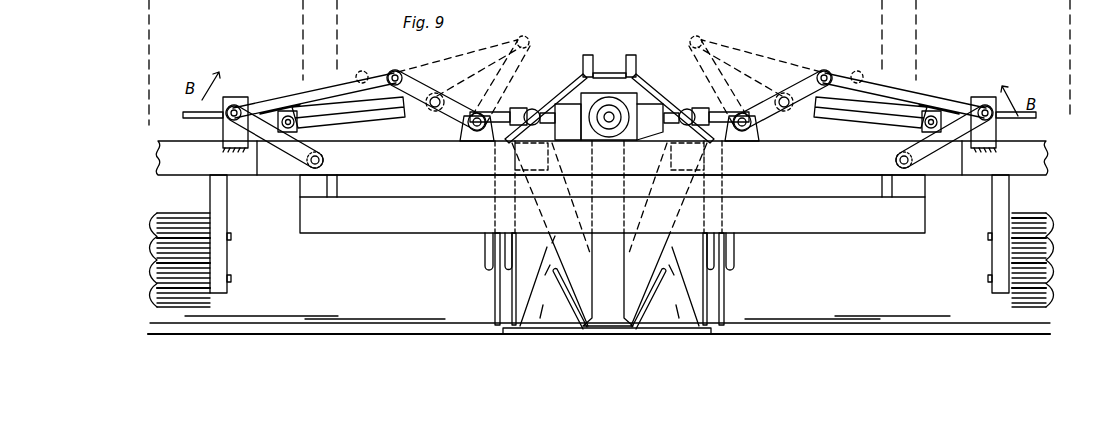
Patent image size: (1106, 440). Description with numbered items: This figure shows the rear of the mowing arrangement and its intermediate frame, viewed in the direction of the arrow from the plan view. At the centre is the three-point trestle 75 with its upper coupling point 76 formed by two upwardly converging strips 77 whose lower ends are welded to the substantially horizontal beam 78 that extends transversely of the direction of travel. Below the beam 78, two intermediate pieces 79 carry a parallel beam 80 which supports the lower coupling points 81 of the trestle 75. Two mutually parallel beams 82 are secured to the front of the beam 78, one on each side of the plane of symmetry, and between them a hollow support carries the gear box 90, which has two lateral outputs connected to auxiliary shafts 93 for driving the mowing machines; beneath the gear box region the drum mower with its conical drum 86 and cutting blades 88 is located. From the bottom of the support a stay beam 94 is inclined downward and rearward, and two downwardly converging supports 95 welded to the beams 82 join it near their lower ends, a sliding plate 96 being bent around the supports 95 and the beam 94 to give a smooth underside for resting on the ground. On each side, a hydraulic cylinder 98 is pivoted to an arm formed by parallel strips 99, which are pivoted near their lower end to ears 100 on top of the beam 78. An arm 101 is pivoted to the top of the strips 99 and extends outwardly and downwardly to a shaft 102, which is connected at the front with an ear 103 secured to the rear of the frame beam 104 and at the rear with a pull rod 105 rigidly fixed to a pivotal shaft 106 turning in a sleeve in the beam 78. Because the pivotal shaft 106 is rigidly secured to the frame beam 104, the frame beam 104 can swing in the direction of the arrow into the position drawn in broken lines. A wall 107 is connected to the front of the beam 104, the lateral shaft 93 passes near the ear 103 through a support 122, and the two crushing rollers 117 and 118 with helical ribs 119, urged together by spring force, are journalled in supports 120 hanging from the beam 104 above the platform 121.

The three-point trestle 75 is at (632, 42).
The upper coupling point 76 is at (590, 55).
The upwardly converging strips 77 is at (575, 80).
The horizontal beam 78 is at (799, 178).
The intermediate pieces 79 is at (300, 191).
The beam 80 is at (368, 234).
The lower coupling points 81 is at (485, 263).
The parallel beams 82 is at (549, 160).
The conical drum 86 is at (680, 305).
The cutting blades 88 is at (490, 325).
The gear box 90 is at (640, 97).
The auxiliary shafts 93 is at (520, 112).
The stay beam 94 is at (618, 278).
The downwardly converging supports 95 is at (552, 253).
The sliding plate 96 is at (641, 309).
The hydraulic cylinder 98 is at (390, 112).
The strips 99 is at (396, 70).
The ears 100 is at (477, 134).
The arm 101 is at (282, 100).
The shaft 102 is at (222, 108).
The ear 103 is at (222, 130).
The frame beam 104 is at (158, 157).
The pull rod 105 is at (328, 158).
The pivotal shaft 106 is at (327, 197).
The wall 107 is at (495, 284).
The crushing roller 117 is at (153, 213).
The crushing roller 118 is at (150, 291).
The helical ribs 119 is at (1048, 229).
The supports 120 is at (210, 192).
The platform 121 is at (150, 322).
The support 122 is at (240, 97).